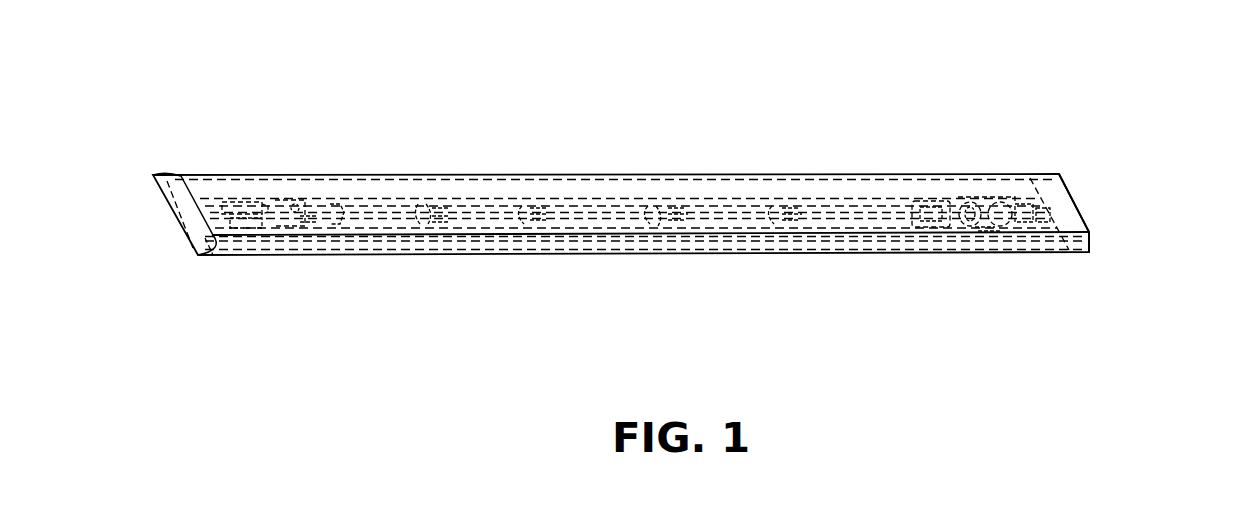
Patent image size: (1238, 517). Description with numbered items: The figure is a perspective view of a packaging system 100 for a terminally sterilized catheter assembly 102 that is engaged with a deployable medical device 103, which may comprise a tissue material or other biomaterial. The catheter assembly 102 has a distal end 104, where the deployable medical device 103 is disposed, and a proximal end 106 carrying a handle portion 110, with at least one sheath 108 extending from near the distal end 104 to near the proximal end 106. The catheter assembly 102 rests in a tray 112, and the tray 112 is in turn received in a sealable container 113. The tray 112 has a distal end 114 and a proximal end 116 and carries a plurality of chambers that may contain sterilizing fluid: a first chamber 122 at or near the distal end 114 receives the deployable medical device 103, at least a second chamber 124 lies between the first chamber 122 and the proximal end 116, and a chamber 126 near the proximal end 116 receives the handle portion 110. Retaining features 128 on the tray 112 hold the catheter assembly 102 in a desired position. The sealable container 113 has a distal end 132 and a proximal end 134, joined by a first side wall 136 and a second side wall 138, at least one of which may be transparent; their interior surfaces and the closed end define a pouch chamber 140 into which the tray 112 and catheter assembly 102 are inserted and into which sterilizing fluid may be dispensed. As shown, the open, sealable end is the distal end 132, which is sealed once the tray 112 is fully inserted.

The packaging system 100 is at (865, 72).
The catheter assembly 102 is at (990, 190).
The deployable medical device 103 is at (236, 203).
The distal end 104 is at (203, 192).
The proximal end 106 is at (1037, 187).
The sheath 108 is at (715, 217).
The handle portion 110 is at (952, 200).
The tray 112 is at (537, 200).
The sealable container 113 is at (1075, 239).
The distal end 114 is at (202, 227).
The proximal end 116 is at (1050, 210).
The first chamber 122 is at (289, 216).
The second chamber 124 is at (487, 226).
The chamber 126 is at (990, 227).
The retaining features 128 is at (240, 236).
The distal end 132 is at (162, 193).
The proximal end 134 is at (1090, 232).
The first side wall 136 is at (606, 180).
The second side wall 138 is at (573, 255).
The chamber 140 is at (1060, 177).